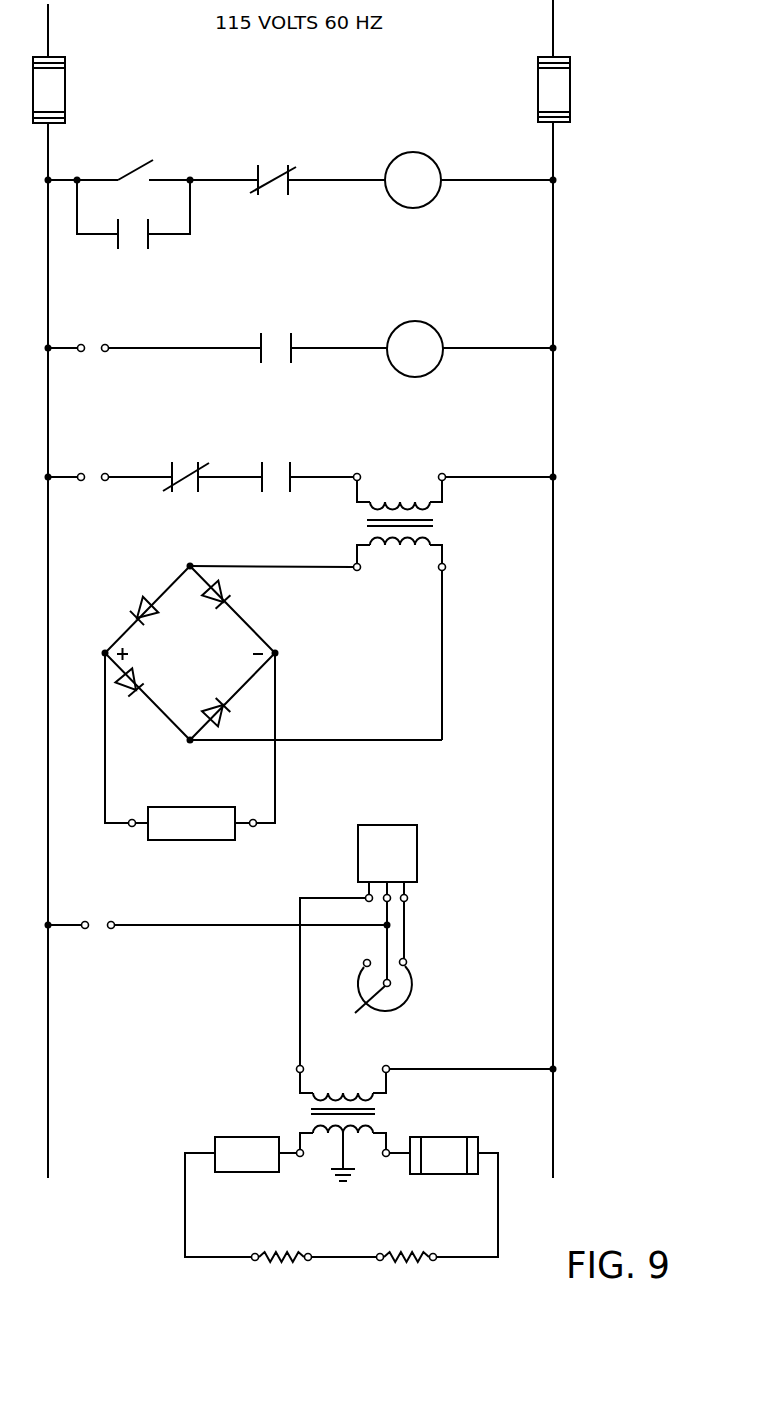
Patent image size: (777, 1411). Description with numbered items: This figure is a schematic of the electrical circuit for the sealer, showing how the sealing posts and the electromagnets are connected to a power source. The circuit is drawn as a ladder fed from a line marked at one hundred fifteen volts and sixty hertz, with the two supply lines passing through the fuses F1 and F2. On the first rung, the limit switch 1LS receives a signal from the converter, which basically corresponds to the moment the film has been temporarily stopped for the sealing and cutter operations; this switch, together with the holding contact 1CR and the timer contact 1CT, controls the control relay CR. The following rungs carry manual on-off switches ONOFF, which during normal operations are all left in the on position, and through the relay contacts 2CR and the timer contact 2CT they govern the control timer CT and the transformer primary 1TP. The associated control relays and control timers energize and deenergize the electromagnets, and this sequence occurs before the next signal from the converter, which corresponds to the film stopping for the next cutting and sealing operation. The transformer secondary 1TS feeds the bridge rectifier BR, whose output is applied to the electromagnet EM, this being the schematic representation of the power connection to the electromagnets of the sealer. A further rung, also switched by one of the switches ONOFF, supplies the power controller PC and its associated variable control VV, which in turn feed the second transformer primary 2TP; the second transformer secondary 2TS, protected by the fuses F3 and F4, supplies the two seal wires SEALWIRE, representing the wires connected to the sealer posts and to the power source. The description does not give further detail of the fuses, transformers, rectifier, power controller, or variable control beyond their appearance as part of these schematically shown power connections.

The fuse F1 is at (49, 90).
The fuse F2 is at (554, 89).
The limit switch 1LS is at (153, 158).
The control relay 1CR is at (133, 214).
The control timer 1CT is at (273, 166).
The control relay CR is at (413, 180).
The ON/OFF switch ONOFF is at (115, 916).
The control relay 2CR is at (274, 403).
The control timer CT is at (415, 349).
The control timer 2CT is at (186, 466).
The transformer 1 primary 1TP is at (400, 497).
The transformer 1 secondary 1TS is at (400, 557).
The bridge rectifier BR is at (190, 653).
The electromagnet EM is at (190, 746).
The power control P.C. PC is at (387, 863).
The variable voltage control V.V. VV is at (406, 986).
The transformer 2 primary 2TP is at (425, 1087).
The transformer 2 secondary 2TS is at (343, 1171).
The fuse F3 is at (240, 1197).
The fuse F4 is at (444, 1197).
The seal wires SEALWIRE is at (345, 1272).